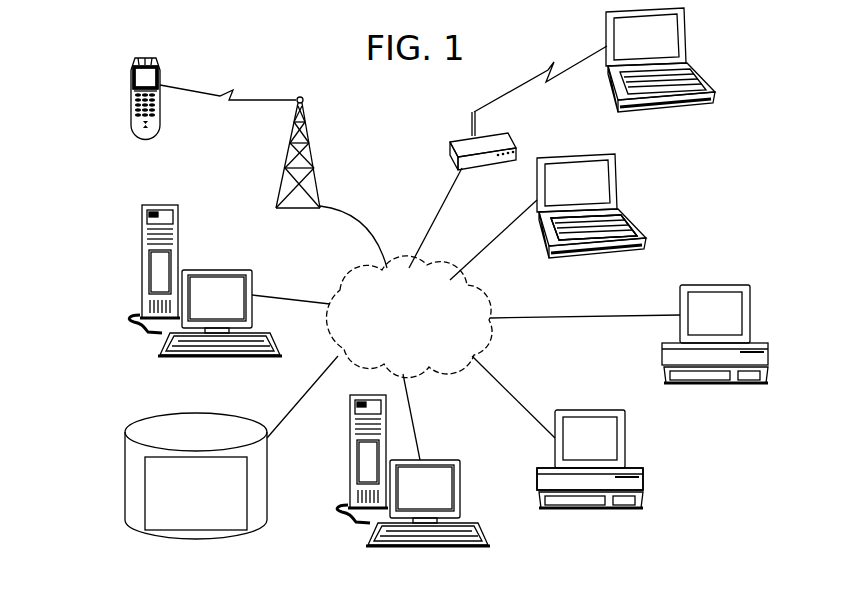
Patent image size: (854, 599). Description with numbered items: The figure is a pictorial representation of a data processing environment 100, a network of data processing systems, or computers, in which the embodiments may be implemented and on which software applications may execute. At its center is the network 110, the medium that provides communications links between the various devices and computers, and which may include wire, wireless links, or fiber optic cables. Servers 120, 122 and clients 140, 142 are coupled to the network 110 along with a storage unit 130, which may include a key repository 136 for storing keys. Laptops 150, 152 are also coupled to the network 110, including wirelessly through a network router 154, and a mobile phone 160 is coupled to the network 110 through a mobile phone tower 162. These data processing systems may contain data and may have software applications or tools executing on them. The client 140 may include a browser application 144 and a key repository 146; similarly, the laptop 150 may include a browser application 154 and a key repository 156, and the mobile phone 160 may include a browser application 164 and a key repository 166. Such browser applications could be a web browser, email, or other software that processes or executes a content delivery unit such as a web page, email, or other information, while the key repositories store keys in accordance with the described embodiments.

The data processing environment 100 is at (369, 145).
The network 110 is at (433, 337).
The server 120 is at (195, 400).
The server 122 is at (404, 590).
The storage unit 130 is at (256, 445).
The key repository 136 is at (218, 530).
The client 140 is at (614, 548).
The client 142 is at (690, 424).
The browser application 144 is at (642, 475).
The key repository 146 is at (643, 478).
The laptop 150 is at (574, 303).
The laptop 152 is at (695, 156).
The network router / browser application 154 is at (785, 200).
The key repository 156 is at (620, 216).
The mobile phone 160 is at (122, 175).
The mobile phone tower 162 is at (322, 256).
The browser application 164 is at (133, 71).
The key repository 166 is at (160, 68).